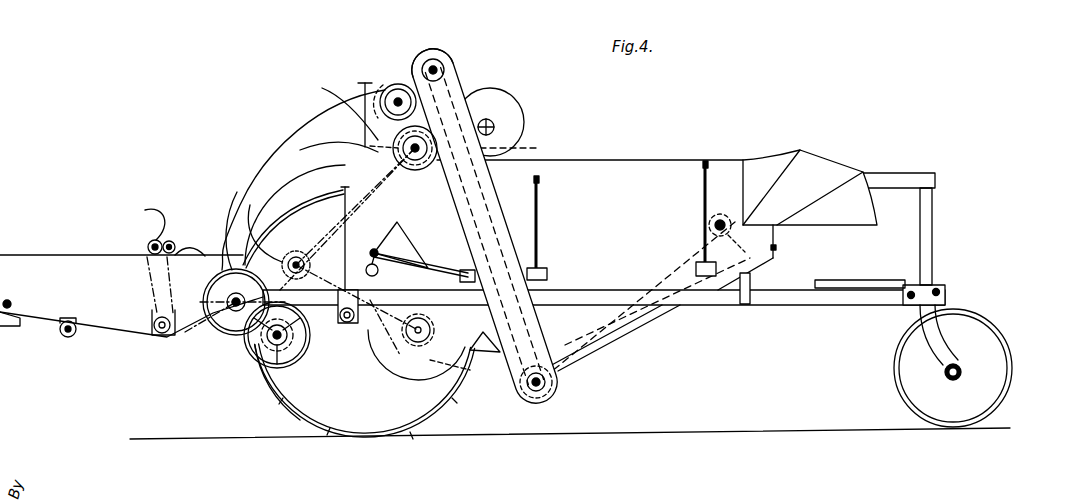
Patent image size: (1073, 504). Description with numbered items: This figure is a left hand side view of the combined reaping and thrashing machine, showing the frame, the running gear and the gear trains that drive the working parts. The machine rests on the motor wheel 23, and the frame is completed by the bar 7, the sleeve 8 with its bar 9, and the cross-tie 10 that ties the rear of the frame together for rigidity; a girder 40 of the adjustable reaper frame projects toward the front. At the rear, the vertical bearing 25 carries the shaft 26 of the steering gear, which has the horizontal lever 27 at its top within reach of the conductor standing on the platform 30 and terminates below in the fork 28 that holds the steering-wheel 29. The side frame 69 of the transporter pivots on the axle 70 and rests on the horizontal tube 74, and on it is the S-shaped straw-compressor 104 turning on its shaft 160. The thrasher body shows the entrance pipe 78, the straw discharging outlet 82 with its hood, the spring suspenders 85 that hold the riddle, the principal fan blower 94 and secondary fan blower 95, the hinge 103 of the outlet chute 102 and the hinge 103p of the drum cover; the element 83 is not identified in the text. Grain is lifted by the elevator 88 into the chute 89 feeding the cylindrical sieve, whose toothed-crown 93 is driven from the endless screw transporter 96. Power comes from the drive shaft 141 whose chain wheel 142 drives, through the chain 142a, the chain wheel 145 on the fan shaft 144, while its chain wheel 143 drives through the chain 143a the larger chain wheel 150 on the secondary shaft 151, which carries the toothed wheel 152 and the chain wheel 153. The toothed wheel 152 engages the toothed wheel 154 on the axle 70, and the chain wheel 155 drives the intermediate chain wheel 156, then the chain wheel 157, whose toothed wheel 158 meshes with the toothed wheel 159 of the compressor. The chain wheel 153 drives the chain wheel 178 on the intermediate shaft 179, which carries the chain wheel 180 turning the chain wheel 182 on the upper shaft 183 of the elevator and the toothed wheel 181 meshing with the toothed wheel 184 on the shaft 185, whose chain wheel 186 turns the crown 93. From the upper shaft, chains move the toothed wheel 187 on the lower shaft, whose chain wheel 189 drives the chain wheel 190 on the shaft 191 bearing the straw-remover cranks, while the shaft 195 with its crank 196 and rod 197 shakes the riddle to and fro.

The bar 7 is at (806, 306).
The sleeve 8 is at (347, 323).
The bar 9 is at (714, 312).
The cross-tie 10 is at (750, 280).
The motor wheel 23 is at (432, 409).
The vertical bearing 25 is at (947, 300).
The shaft of the steering-wheel 26 is at (933, 222).
The horizontal lever 27 is at (912, 160).
The fork 28 is at (937, 340).
The steering-wheel 29 is at (1010, 364).
The platform 30 is at (857, 268).
The girder 40 is at (18, 326).
The side frame 69 is at (131, 296).
The axle 70 is at (231, 293).
The horizontal tube 74 is at (65, 336).
The entrance pipe 78 is at (356, 238).
The discharging outlet 82 is at (778, 238).
The hopper 83 is at (815, 165).
The spring suspender 85 is at (539, 216).
The elevator 88 is at (484, 226).
The chute 89 is at (405, 85).
The toothed-crown 93 is at (393, 78).
The principal fan blower 94 is at (405, 372).
The secondary fan blower 95 is at (516, 118).
The endless screw transporter 96 is at (392, 151).
The chute 102 is at (336, 140).
The hinge 103 is at (365, 83).
The hinge 103p is at (318, 200).
The straw-compressor 104 is at (145, 210).
The shaft 141 is at (258, 195).
The chain wheel 142 is at (219, 222).
The chain 142a is at (392, 360).
The chain wheel 143 is at (257, 224).
The chain 143a is at (282, 266).
The shaft 144 is at (431, 333).
The chain wheel 145 is at (462, 360).
The chain wheel 150 is at (268, 405).
The secondary shaft 151 is at (290, 355).
The toothed wheel 152 is at (248, 385).
The chain wheel 153 is at (258, 345).
The toothed wheel 154 is at (190, 330).
The chain wheel 155 is at (226, 330).
The intermediate chain wheel 156 is at (158, 336).
The chain wheel 157 is at (146, 258).
The toothed wheel 158 is at (161, 234).
The toothed wheel 159 is at (188, 240).
The shaft 160 is at (172, 238).
The chain wheel 178 is at (347, 219).
The intermediate shaft 179 is at (420, 160).
The chain wheel 180 is at (520, 147).
The toothed wheel 181 is at (430, 146).
The chain wheel 182 is at (440, 62).
The upper shaft 183 is at (458, 71).
The toothed wheel 184 is at (310, 115).
The shaft 185 is at (370, 146).
The chain wheel 186 is at (338, 107).
The toothed wheel 187 is at (565, 379).
The chain wheel 189 is at (546, 392).
The chain wheel 190 is at (746, 245).
The shaft 191 is at (722, 216).
The shaft 195 is at (380, 271).
The crank 196 is at (399, 245).
The rod 197 is at (432, 258).